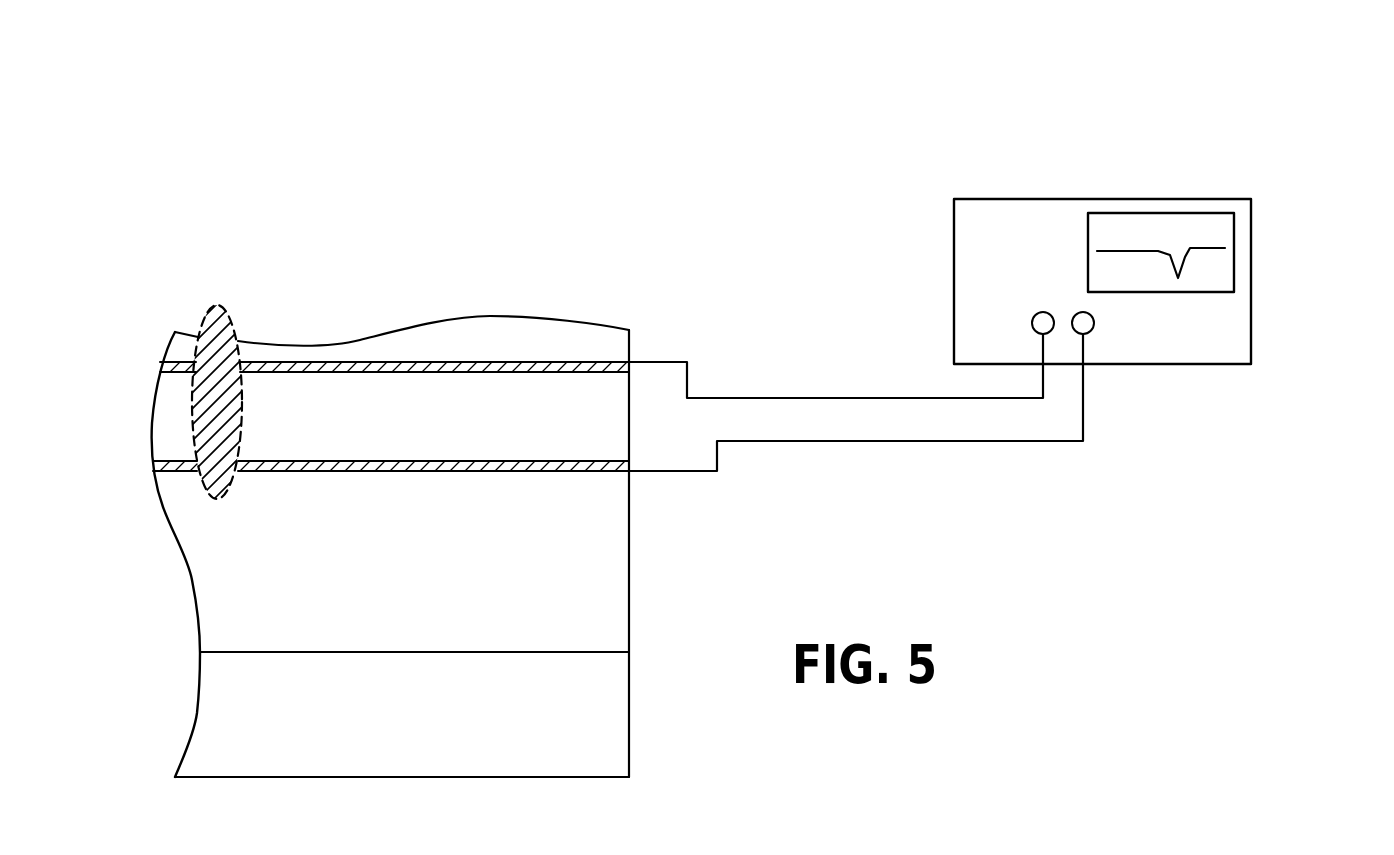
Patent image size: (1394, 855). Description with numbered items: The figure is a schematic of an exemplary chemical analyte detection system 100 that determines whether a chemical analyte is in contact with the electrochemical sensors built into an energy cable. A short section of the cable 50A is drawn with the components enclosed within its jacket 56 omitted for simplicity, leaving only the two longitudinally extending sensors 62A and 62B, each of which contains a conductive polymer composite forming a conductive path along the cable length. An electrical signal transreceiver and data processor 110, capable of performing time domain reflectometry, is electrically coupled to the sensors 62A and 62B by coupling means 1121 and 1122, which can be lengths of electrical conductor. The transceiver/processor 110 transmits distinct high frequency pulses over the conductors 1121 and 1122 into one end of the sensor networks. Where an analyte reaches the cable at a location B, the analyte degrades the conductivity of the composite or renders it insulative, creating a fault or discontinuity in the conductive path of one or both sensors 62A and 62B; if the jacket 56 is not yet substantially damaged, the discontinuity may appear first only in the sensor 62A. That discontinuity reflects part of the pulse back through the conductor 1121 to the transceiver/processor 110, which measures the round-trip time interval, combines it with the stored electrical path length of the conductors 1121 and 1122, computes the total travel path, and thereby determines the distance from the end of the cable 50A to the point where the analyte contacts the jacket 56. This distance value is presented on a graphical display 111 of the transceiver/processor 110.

The chemical analyte detection system 100 is at (329, 144).
The cable 50A is at (500, 285).
The jacket 56 is at (167, 423).
The sensor 62A is at (572, 362).
The sensor 62B is at (455, 463).
The location B is at (220, 497).
The coupling means 1121 is at (832, 397).
The coupling means 1122 is at (897, 442).
The electrical signal transreceiver and data processor 110 is at (1128, 198).
The graphical display 111 is at (1234, 257).